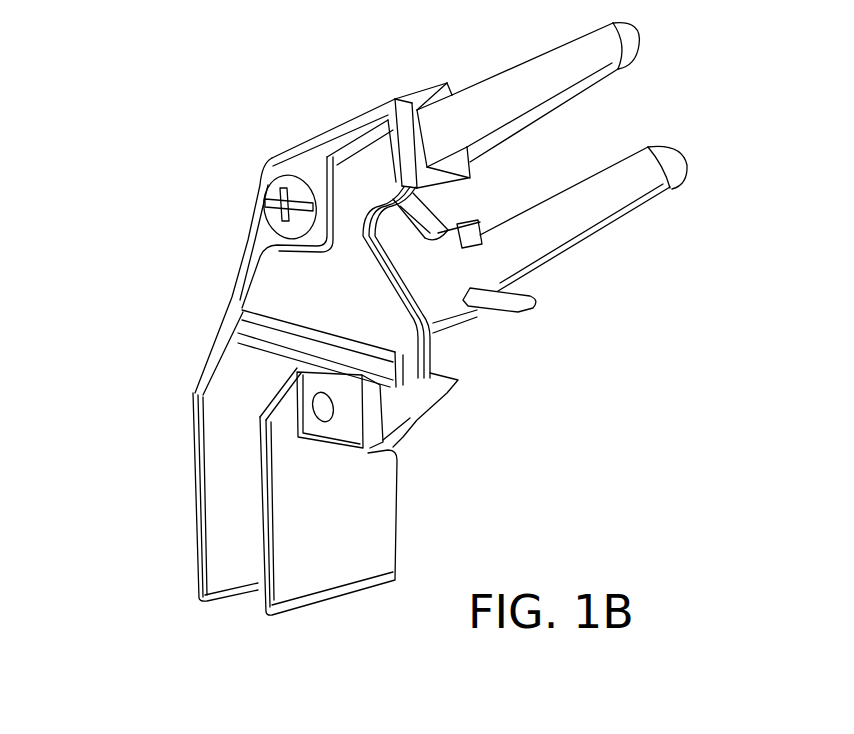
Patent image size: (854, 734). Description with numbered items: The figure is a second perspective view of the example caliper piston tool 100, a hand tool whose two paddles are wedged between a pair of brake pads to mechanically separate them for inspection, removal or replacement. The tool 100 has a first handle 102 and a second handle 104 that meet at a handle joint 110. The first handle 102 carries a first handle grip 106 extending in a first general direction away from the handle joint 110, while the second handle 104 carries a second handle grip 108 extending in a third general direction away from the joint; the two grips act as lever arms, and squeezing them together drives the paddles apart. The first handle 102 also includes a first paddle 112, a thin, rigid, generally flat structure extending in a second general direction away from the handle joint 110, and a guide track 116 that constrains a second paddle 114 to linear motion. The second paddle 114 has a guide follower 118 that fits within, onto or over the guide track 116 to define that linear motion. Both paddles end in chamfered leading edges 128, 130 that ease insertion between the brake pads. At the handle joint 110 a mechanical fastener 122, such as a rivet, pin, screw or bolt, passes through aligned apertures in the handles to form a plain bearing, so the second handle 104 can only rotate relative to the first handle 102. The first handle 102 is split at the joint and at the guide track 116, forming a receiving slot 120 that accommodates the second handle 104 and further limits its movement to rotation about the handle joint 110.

The caliper piston tool 100 is at (250, 88).
The first handle 102 is at (362, 116).
The second handle 104 is at (463, 327).
The first handle grip 106 is at (474, 86).
The second handle grip 108 is at (628, 213).
The handle joint 110 is at (262, 178).
The first paddle 112 is at (193, 482).
The second paddle 114 is at (393, 530).
The guide track 116 is at (443, 437).
The guide follower 118 is at (427, 413).
The receiving slot 120 is at (423, 343).
The mechanical fastener 122 is at (270, 218).
The chamfered leading edge 128 is at (193, 592).
The chamfered leading edge 130 is at (396, 580).